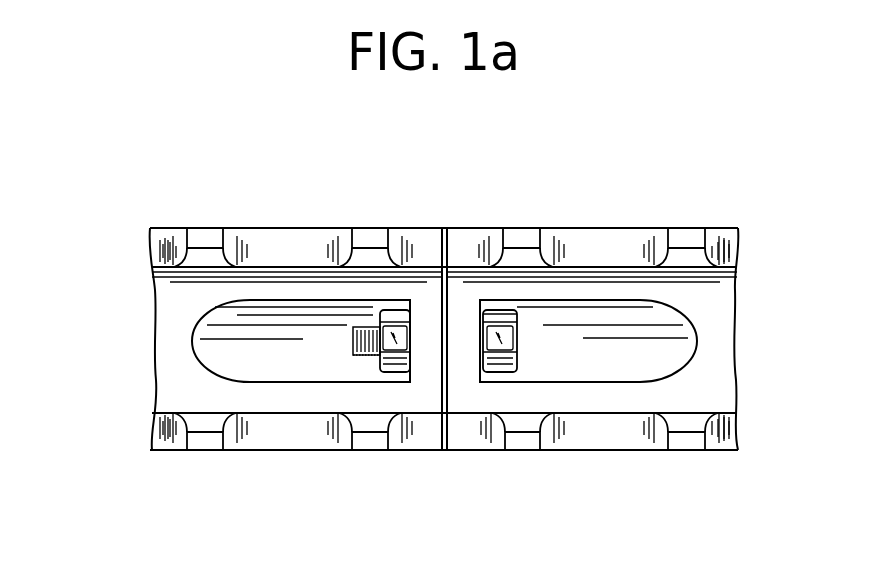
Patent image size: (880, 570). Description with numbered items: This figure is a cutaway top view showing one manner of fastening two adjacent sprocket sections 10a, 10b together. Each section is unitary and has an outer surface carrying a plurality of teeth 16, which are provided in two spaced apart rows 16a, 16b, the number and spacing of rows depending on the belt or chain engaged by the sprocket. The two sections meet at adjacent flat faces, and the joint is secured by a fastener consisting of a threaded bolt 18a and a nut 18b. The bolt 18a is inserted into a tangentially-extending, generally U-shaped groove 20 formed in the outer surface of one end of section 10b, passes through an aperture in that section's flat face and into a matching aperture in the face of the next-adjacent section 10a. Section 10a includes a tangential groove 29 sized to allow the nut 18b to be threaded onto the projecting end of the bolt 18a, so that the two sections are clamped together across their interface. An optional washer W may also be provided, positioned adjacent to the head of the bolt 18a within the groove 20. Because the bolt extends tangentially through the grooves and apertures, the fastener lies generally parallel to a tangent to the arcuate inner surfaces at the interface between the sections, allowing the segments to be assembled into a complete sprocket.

The sprocket section 10a is at (180, 374).
The sprocket section 10b is at (715, 375).
The teeth 16 is at (205, 243).
The row of teeth 16a is at (158, 436).
The row of teeth 16b is at (160, 247).
The threaded bolt 18a is at (502, 367).
The nut 18b is at (398, 317).
The U-shaped groove 20 is at (584, 312).
The tangential groove 29 is at (300, 368).
The washer W is at (485, 316).